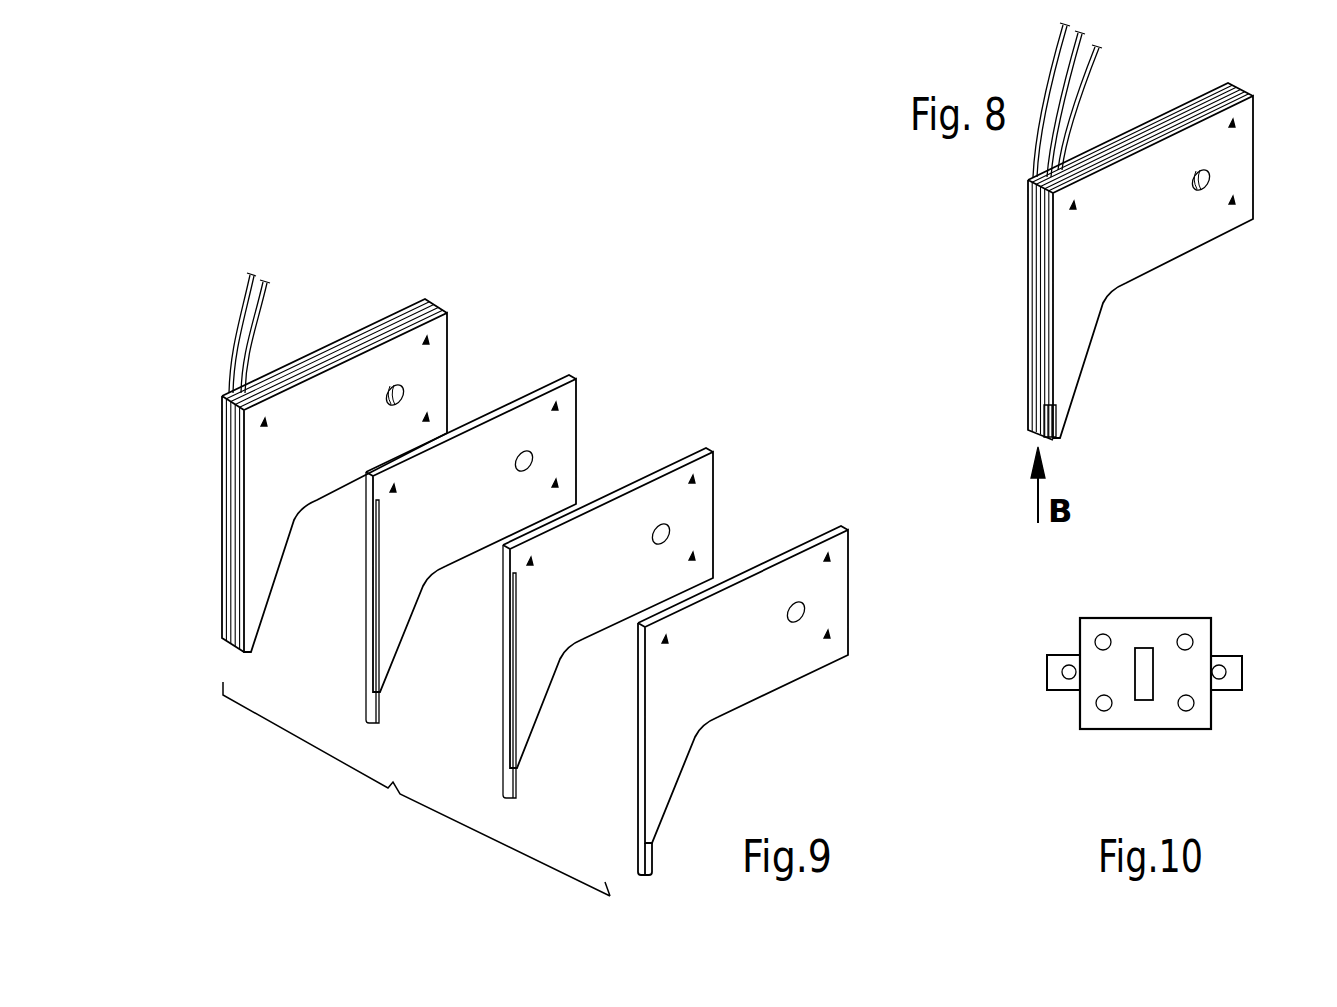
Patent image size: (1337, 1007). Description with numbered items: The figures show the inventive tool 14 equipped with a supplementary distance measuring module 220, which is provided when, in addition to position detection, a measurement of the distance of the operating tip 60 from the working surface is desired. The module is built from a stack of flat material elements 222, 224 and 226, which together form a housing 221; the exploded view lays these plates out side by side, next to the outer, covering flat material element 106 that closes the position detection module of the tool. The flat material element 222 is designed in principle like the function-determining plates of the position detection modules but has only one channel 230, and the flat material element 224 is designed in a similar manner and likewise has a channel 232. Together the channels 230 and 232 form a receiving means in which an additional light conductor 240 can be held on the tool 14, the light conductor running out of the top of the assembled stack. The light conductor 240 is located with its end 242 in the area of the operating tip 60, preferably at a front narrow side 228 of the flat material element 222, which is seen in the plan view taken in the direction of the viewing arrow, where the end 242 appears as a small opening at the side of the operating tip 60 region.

In FIG. 8, the tool 14 is at (1107, 252).
In FIG. 10, the operating tip 60 is at (1203, 633).
In FIG. 9, the outer covering flat material element 106 is at (250, 597).
In FIG. 9, the distance measuring module 220 is at (713, 427).
In FIG. 9, the housing 221 is at (416, 789).
In FIG. 8, the housing 221 is at (1083, 380).
In FIG. 9, the flat material element 222 is at (517, 545).
In FIG. 9, the flat material element 224 is at (661, 621).
In FIG. 9, the flat material element 226 is at (842, 547).
In FIG. 10, the front narrow side 228 is at (1260, 690).
In FIG. 9, the channel 230 is at (380, 708).
In FIG. 9, the channel 232 is at (516, 732).
In FIG. 8, the light conductor 240 is at (1072, 100).
In FIG. 10, the end of light conductor 242 is at (1215, 685).